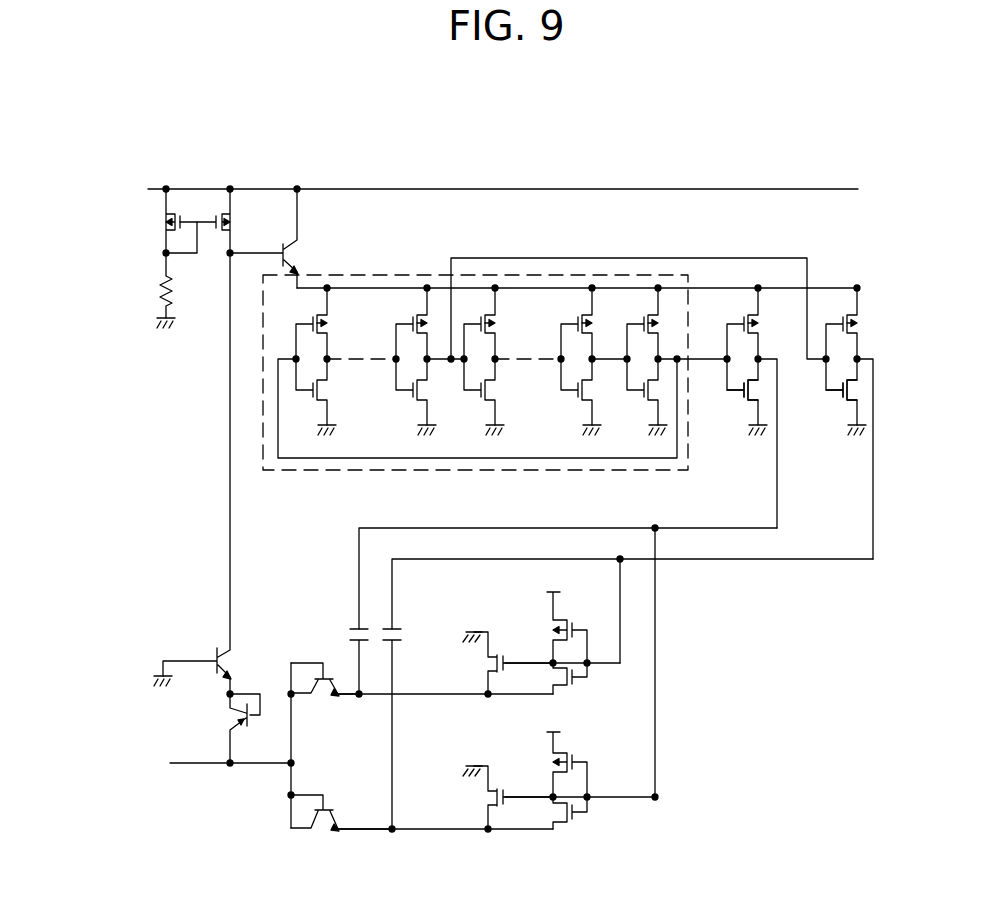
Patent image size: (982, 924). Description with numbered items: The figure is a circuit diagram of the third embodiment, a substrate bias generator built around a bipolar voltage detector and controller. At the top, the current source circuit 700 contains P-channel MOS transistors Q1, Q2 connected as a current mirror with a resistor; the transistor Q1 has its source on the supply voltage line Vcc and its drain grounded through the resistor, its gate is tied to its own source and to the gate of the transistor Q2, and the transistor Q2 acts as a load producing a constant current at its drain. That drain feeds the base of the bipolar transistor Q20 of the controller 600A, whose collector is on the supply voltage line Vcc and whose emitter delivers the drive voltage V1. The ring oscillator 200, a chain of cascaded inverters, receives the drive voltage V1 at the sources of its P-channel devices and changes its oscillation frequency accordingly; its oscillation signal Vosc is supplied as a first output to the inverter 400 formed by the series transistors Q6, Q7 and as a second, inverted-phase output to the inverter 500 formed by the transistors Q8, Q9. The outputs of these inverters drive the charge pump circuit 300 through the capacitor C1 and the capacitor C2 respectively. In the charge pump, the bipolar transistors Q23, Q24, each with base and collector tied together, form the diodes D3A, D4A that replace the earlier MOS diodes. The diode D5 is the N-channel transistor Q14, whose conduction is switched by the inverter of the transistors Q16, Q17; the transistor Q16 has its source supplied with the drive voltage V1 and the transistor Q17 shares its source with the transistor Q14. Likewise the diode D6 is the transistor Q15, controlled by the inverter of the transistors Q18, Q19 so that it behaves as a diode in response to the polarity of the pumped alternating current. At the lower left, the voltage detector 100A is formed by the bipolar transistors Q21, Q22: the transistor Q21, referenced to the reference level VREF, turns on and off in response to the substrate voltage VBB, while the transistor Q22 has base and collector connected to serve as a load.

The current source circuit 700 is at (247, 161).
The controller 600A is at (362, 161).
The ring oscillator 200 is at (560, 362).
The inverter 400 is at (805, 243).
The inverter 500 is at (895, 243).
The voltage detector 100A is at (95, 740).
The charge pump circuit 300 is at (758, 593).
The diode D3A is at (332, 651).
The diode D4A is at (345, 848).
The diode D5 is at (682, 582).
The diode D6 is at (682, 728).
The capacitor C1 is at (352, 627).
The capacitor C2 is at (394, 627).
The P-channel MOS transistor Q1 is at (153, 222).
The P-channel MOS transistor Q2 is at (237, 227).
The bipolar transistor Q20 is at (308, 252).
The P-channel MOS transistor Q6 is at (736, 406).
The N-channel MOS transistor Q7 is at (742, 408).
The P-channel MOS transistor Q8 is at (863, 328).
The N-channel MOS transistor Q9 is at (840, 408).
The bipolar transistor Q21 is at (214, 648).
The bipolar transistor Q22 is at (228, 716).
The bipolar transistor Q23 is at (323, 698).
The bipolar transistor Q24 is at (336, 800).
The N-channel MOS transistor Q14 is at (486, 663).
The N-channel MOS transistor Q15 is at (486, 795).
The P-channel MOS transistor Q16 is at (578, 613).
The N-channel MOS transistor Q17 is at (576, 691).
The P-channel MOS transistor Q18 is at (591, 750).
The N-channel MOS transistor Q19 is at (578, 826).
The supply voltage line Vcc is at (742, 188).
The drive voltage V1 is at (393, 288).
The oscillator output Vosc is at (577, 256).
The reference voltage VREF is at (131, 644).
The voltage VBB is at (199, 765).